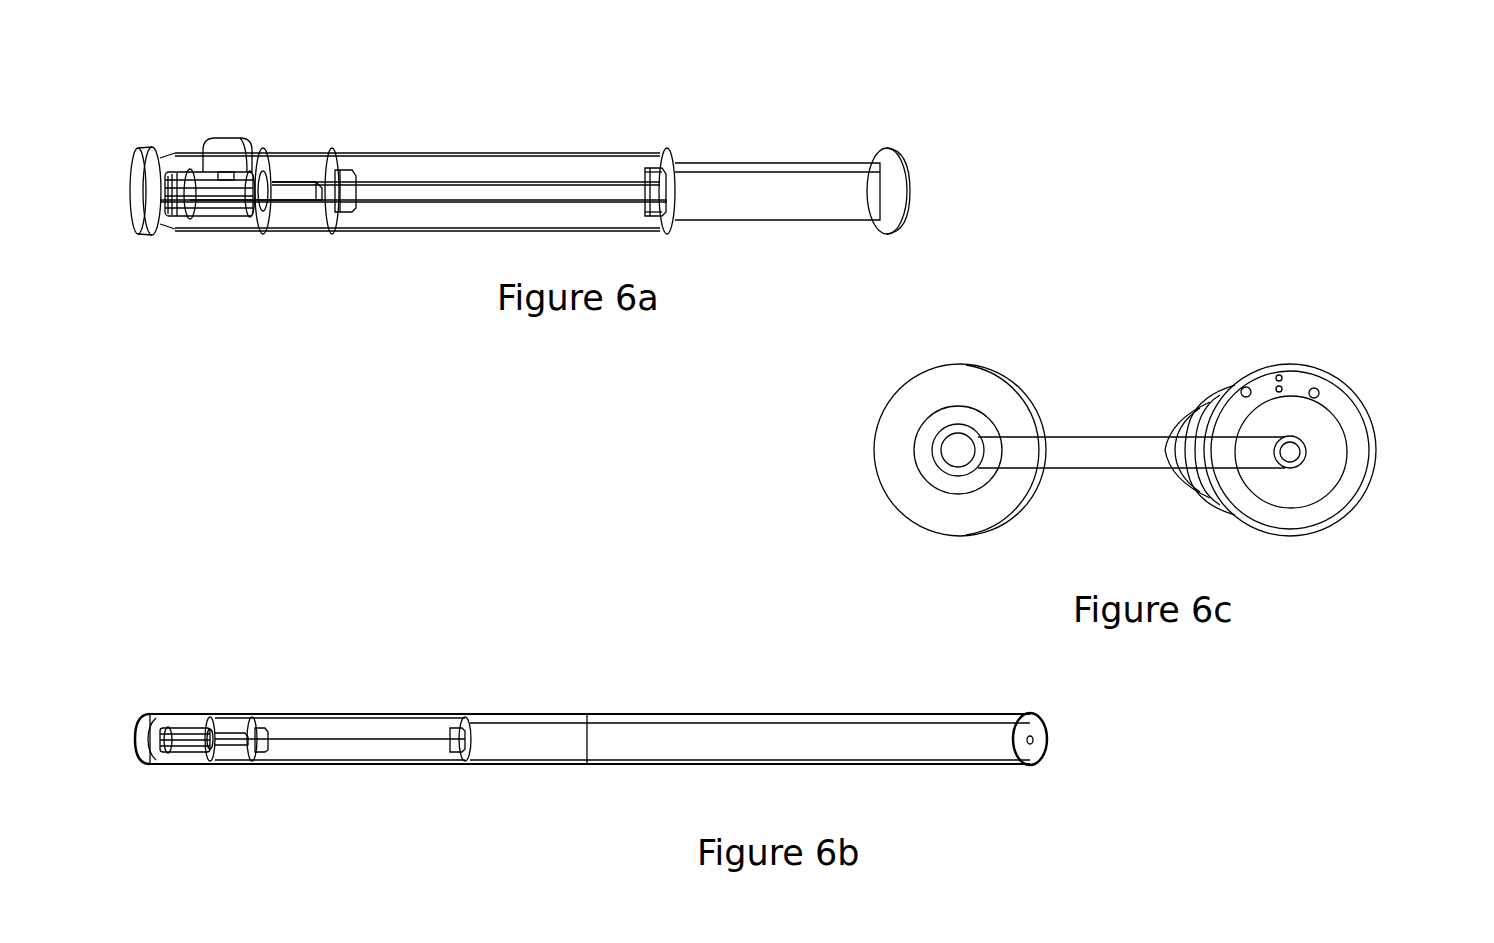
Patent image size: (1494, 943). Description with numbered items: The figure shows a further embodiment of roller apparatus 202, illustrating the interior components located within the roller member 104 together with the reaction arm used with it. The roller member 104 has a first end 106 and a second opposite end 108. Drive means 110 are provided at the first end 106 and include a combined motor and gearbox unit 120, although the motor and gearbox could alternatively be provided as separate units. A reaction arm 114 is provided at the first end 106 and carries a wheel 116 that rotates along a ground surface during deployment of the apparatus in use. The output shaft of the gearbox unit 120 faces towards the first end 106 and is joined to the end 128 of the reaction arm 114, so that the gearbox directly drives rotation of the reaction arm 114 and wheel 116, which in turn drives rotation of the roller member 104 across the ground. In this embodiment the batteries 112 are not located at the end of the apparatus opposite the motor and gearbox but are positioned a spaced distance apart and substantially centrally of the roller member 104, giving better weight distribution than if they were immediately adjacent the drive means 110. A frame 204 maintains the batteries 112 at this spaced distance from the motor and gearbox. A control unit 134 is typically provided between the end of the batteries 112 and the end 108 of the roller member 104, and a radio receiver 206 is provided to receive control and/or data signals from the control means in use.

In FIG. 6b, the roller member 104 is at (783, 713).
In FIG. 6c, the first end 106 is at (1376, 402).
In FIG. 6b, the first end 106 is at (145, 775).
In FIG. 6b, the second opposite end 108 is at (1033, 775).
In FIG. 6a, the drive means 110 is at (222, 240).
In FIG. 6b, the drive means 110 is at (213, 775).
In FIG. 6a, the batteries 112 is at (803, 157).
In FIG. 6b, the batteries 112 is at (523, 775).
In FIG. 6c, the reaction arm 114 is at (1112, 428).
In FIG. 6c, the wheel 116 is at (923, 510).
In FIG. 6a, the motor and gearbox unit 120 is at (166, 232).
In FIG. 6c, the end of reaction arm 128 is at (1292, 452).
In FIG. 6a, the control unit 134 is at (230, 200).
In FIG. 6b, the roller apparatus 202 is at (692, 668).
In FIG. 6a, the frame 204 is at (560, 155).
In FIG. 6a, the radio receiver 206 is at (350, 176).